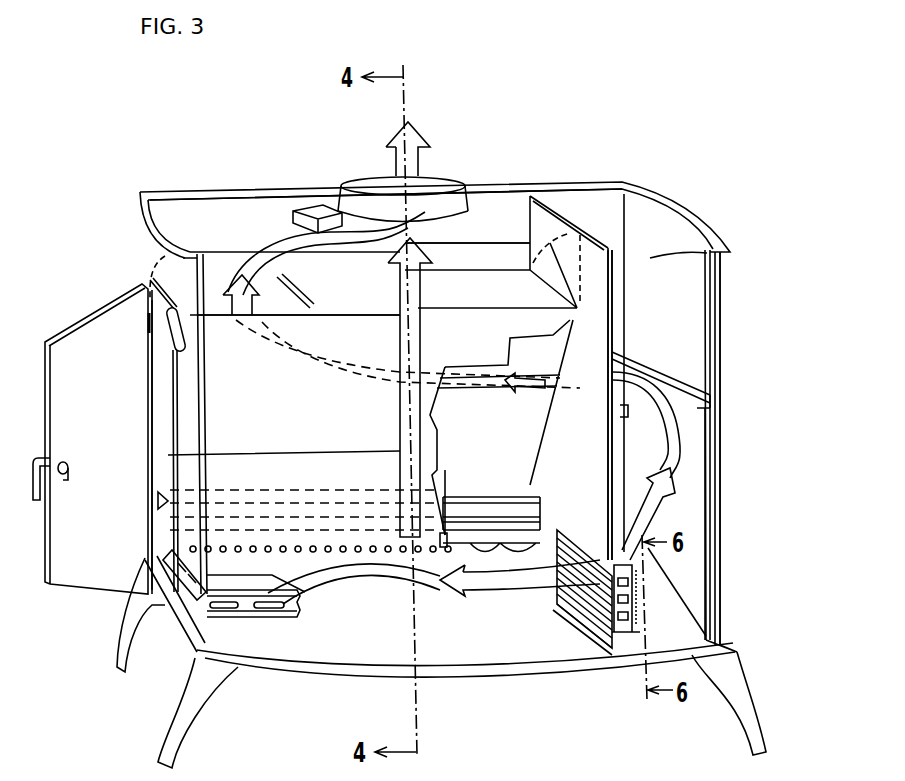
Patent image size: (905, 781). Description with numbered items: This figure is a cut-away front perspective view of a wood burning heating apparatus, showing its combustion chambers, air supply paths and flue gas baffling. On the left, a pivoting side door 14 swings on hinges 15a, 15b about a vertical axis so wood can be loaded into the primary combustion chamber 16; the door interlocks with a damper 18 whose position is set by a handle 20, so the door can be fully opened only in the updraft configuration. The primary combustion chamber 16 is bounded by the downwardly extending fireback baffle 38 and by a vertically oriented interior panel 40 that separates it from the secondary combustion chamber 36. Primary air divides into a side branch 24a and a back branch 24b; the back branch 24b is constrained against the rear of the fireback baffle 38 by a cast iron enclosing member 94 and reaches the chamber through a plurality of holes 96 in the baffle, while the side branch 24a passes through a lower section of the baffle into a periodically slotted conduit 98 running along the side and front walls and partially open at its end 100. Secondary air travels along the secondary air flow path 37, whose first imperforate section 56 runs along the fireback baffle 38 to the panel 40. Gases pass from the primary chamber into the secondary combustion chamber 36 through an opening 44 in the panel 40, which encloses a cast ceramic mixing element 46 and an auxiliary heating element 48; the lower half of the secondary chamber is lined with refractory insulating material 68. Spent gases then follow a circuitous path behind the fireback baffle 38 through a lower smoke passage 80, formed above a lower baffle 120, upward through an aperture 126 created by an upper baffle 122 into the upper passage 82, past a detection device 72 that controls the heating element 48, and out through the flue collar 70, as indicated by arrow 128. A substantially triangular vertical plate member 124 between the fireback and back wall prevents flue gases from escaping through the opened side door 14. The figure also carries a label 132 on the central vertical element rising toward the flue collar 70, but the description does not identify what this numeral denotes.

The pivoting side door 14 is at (84, 440).
The hinge 15a is at (147, 332).
The hinge 15b is at (152, 490).
The primary combustion chamber 16 is at (297, 419).
The damper 18 is at (473, 245).
The handle 20 is at (175, 338).
The side branch of primary air supply flow path 24a is at (195, 573).
The back branch of primary air supply flow path 24b is at (460, 544).
The secondary combustion chamber 36 is at (697, 440).
The secondary air flow path 37 is at (457, 510).
The fireback baffle 38 is at (172, 383).
The interior panel 40 is at (613, 325).
The opening 44 is at (563, 607).
The mixing element 46 is at (603, 607).
The auxiliary heating element 48 is at (646, 618).
The first imperforate section 56 is at (530, 510).
The refractory insulating material 68 is at (619, 436).
The flue collar 70 is at (450, 174).
The detection device 72 is at (313, 212).
The smoke passage 80 is at (502, 419).
The upper smoke passage 82 is at (213, 222).
The enclosing member 94 is at (525, 527).
The holes 96 is at (283, 298).
The slotted conduit 98 is at (262, 618).
The conduit end 100 is at (298, 608).
The lower baffle 120 is at (487, 494).
The upper baffle 122 is at (370, 300).
The vertical plate member 124 is at (158, 402).
The aperture 126 is at (214, 290).
The arrow 128 is at (270, 238).
The central chimney duct 132 is at (420, 293).